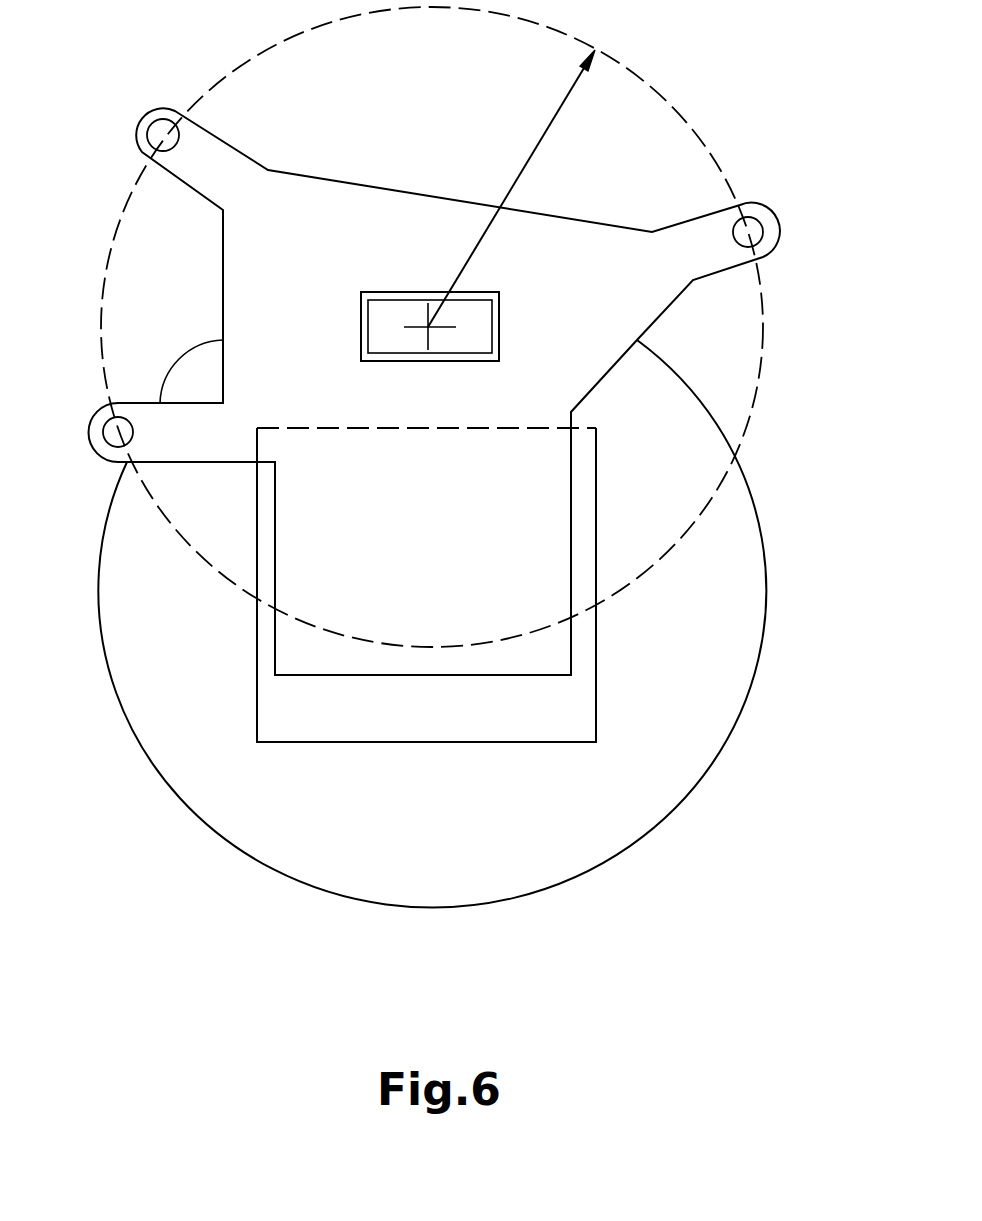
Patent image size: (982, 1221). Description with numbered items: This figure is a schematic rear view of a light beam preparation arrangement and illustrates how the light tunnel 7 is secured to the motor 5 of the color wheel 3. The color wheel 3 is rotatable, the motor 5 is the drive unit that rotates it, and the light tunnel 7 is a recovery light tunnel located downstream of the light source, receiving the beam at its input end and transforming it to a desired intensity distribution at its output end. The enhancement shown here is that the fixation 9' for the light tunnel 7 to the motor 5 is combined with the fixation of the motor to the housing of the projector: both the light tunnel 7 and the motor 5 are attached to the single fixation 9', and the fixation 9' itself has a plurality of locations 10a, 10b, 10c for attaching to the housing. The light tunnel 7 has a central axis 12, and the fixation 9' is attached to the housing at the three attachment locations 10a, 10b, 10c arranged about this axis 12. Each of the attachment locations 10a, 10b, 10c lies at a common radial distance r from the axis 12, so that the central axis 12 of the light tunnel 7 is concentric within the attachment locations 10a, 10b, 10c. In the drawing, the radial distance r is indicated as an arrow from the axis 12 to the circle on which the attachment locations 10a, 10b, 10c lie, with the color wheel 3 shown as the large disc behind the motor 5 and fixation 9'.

The color wheel 3 is at (227, 812).
The motor 5 is at (449, 725).
The light tunnel 7 is at (481, 293).
The fixation 9' is at (434, 341).
The attachment location 10a is at (103, 432).
The attachment location 10b is at (141, 126).
The attachment location 10c is at (774, 225).
The central axis 12 is at (427, 322).
The radial distance r is at (540, 143).